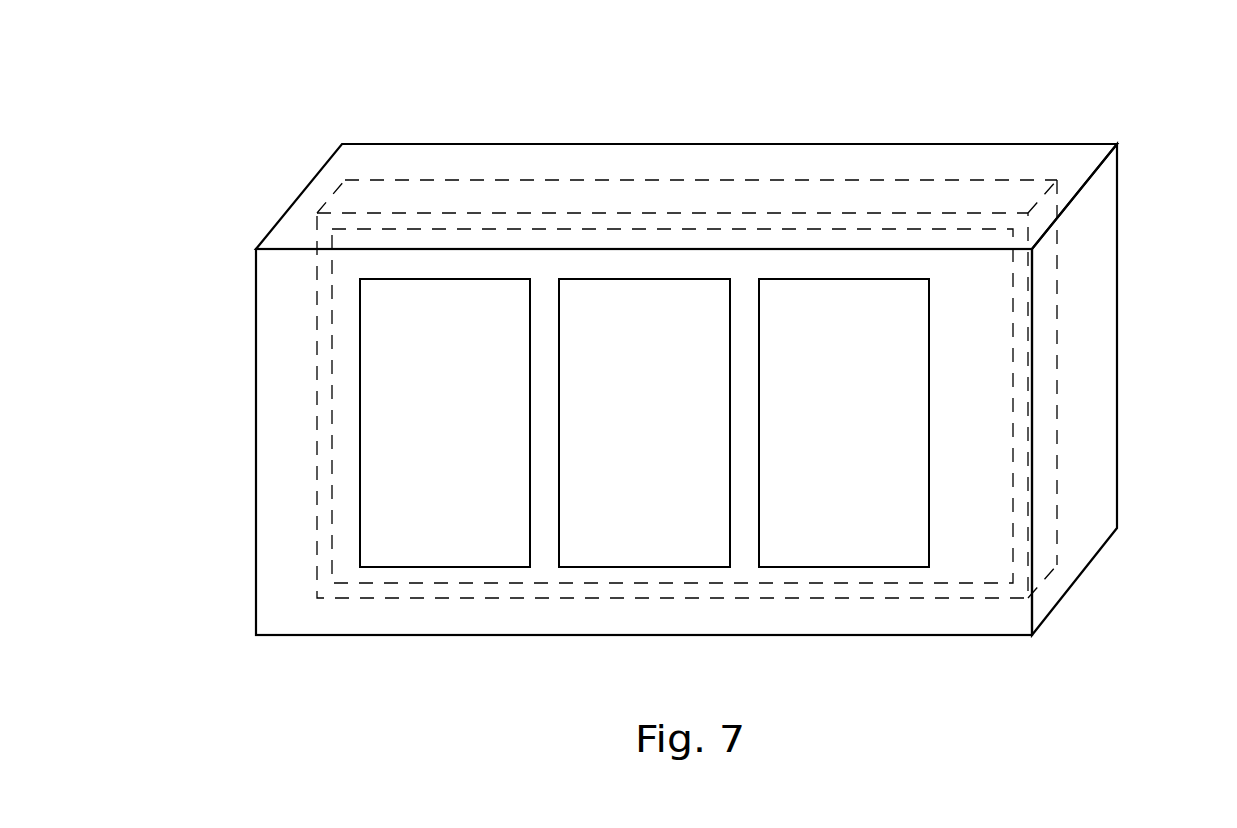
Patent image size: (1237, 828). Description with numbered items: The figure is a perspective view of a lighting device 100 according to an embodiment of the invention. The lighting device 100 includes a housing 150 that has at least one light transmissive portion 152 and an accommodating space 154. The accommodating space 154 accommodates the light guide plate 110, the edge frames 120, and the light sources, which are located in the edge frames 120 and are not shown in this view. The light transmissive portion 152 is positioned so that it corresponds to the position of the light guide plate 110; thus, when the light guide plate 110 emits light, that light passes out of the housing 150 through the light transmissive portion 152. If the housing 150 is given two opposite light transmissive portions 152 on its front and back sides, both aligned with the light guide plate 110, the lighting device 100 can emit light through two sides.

The lighting device 100 is at (264, 106).
The light guide plate 110 is at (448, 342).
The edge frames 120 is at (562, 199).
The housing 150 is at (1098, 350).
The light transmissive portion 152 is at (352, 415).
The accommodating space 154 is at (1090, 420).